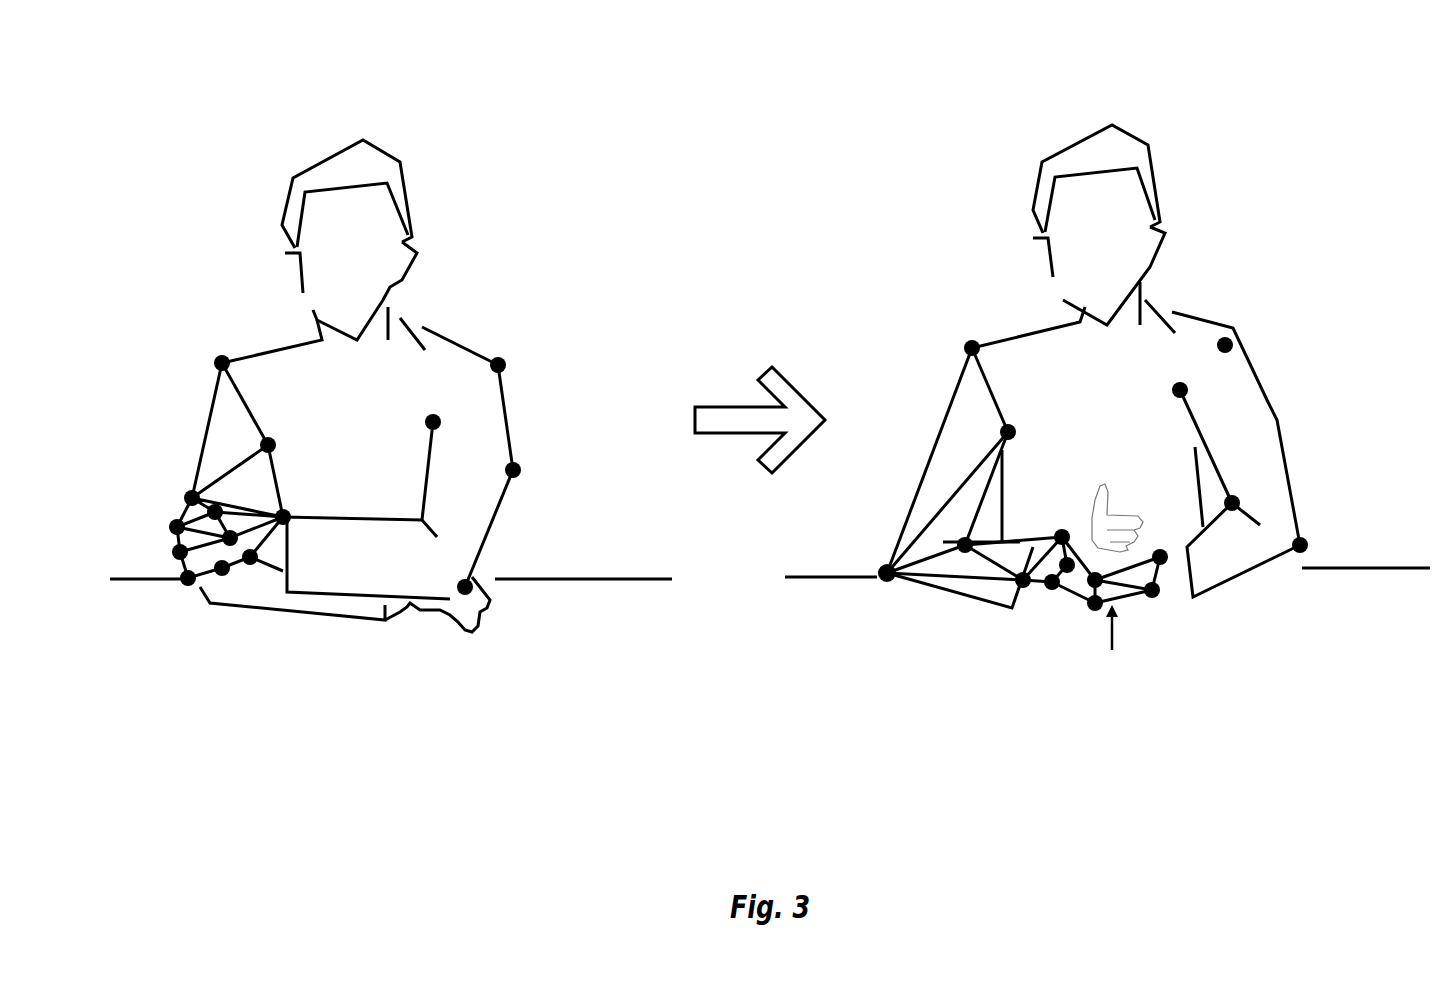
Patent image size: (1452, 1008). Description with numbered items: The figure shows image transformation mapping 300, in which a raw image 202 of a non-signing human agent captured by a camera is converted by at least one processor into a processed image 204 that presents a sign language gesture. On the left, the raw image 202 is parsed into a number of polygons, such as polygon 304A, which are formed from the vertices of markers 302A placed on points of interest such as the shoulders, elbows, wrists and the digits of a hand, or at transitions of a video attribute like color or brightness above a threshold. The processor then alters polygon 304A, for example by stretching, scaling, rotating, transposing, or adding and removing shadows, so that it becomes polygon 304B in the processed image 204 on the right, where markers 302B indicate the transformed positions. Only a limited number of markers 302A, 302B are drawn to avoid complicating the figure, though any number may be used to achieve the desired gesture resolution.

The image transformation mapping 300 is at (1340, 48).
The raw image 202 is at (542, 190).
The processed image 204 is at (1292, 235).
The markers 302A is at (178, 405).
The markers 302B is at (1320, 387).
The polygon 304A is at (238, 508).
The polygon 304B is at (1148, 557).